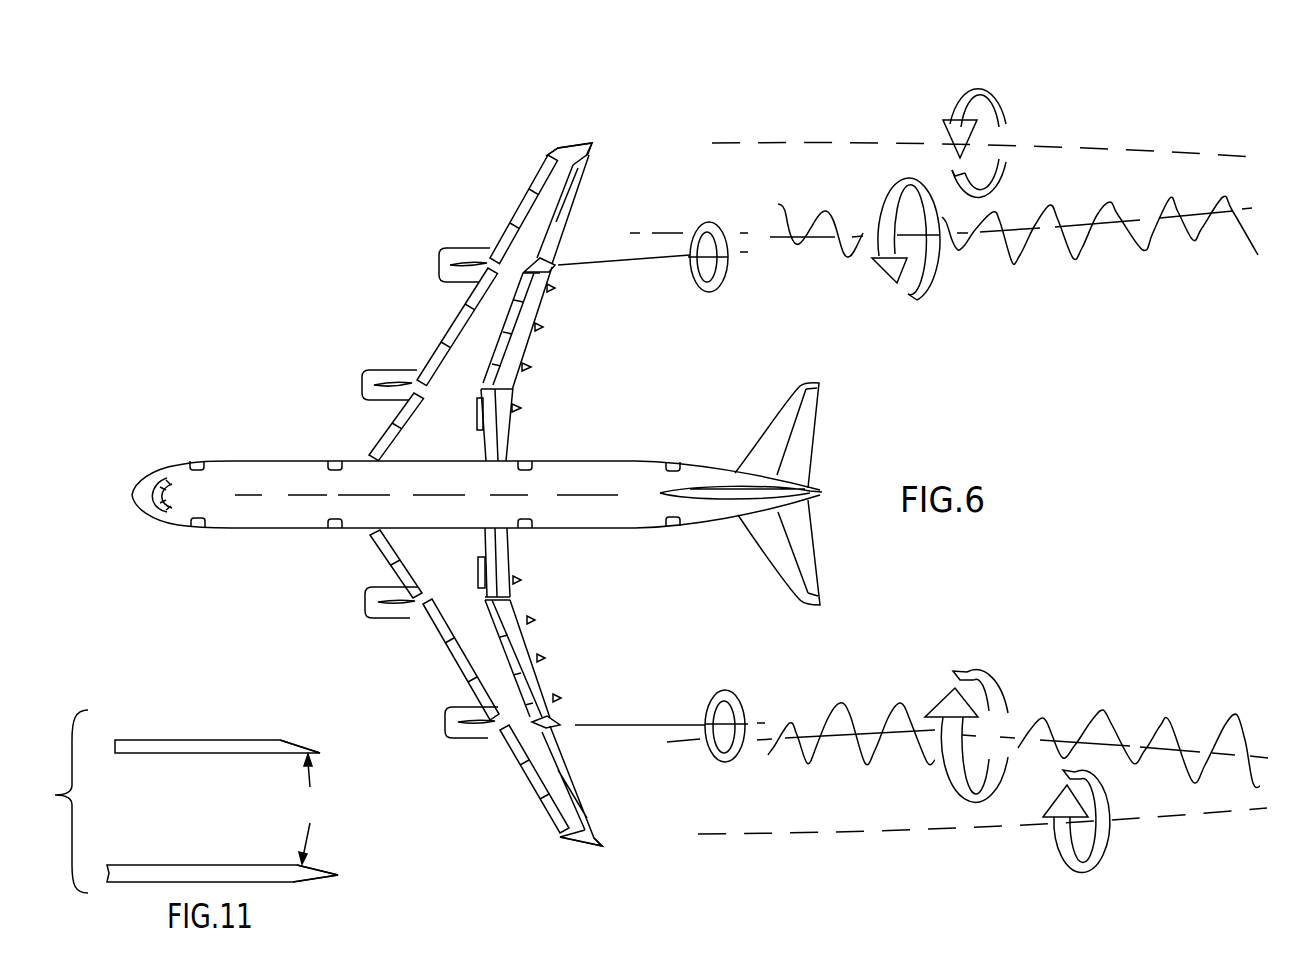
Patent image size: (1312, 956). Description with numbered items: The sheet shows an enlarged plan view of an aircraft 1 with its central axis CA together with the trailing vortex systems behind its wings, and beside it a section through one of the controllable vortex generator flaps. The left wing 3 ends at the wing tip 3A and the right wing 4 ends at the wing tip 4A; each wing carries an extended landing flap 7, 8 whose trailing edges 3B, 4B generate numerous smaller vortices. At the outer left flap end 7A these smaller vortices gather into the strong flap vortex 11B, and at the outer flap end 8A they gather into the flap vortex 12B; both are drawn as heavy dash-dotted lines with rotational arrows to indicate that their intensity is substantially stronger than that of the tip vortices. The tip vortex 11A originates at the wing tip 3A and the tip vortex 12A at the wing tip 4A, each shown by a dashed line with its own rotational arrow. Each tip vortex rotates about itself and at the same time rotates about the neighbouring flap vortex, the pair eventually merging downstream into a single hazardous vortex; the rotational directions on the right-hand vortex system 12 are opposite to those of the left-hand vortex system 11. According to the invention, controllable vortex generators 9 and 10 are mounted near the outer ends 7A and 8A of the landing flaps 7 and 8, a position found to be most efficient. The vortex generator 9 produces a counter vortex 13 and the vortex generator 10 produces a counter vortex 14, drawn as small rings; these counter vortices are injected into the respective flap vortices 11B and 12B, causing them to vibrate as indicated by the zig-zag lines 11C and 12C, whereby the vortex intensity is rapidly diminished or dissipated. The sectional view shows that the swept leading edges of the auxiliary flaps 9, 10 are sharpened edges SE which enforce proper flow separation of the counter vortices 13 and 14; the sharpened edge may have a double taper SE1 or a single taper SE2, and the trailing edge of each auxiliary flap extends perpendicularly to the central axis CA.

In FIG. 6, the aircraft 1 is at (302, 305).
In FIG. 6, the central axis CA is at (302, 495).
In FIG. 6, the wing 3 is at (467, 617).
In FIG. 6, the wing tip 3A is at (597, 847).
In FIG. 6, the trailing edge 3B is at (512, 566).
In FIG. 6, the wing 4 is at (478, 338).
In FIG. 6, the wing tip 4A is at (563, 150).
In FIG. 6, the trailing edge 4B is at (506, 429).
In FIG. 6, the landing flap 7 is at (533, 646).
In FIG. 6, the outer flap end 7A is at (560, 723).
In FIG. 6, the landing flap 8 is at (533, 355).
In FIG. 6, the outer flap end 8A is at (553, 270).
In FIG. 6, the controllable vortex generator 9 is at (538, 728).
In FIG. 11, the controllable vortex generator 9 is at (213, 753).
In FIG. 6, the controllable vortex generator 10 is at (537, 262).
In FIG. 11, the controllable vortex generator 10 is at (217, 746).
In FIG. 6, the left-hand vortex system 11 is at (1012, 840).
In FIG. 6, the tip vortex 11A is at (1100, 851).
In FIG. 6, the flap vortex 11B is at (1002, 691).
In FIG. 6, the vibration 11C is at (1108, 712).
In FIG. 6, the right-hand vortex system 12 is at (1137, 133).
In FIG. 6, the tip vortex 12A is at (995, 97).
In FIG. 6, the flap vortex 12B is at (918, 300).
In FIG. 6, the vibration 12C is at (1078, 259).
In FIG. 6, the counter vortex 13 is at (733, 692).
In FIG. 6, the counter vortex 14 is at (718, 283).
In FIG. 11, the sharpened edge SE is at (314, 809).
In FIG. 11, the double taper SE1 is at (320, 866).
In FIG. 11, the single taper SE2 is at (299, 743).